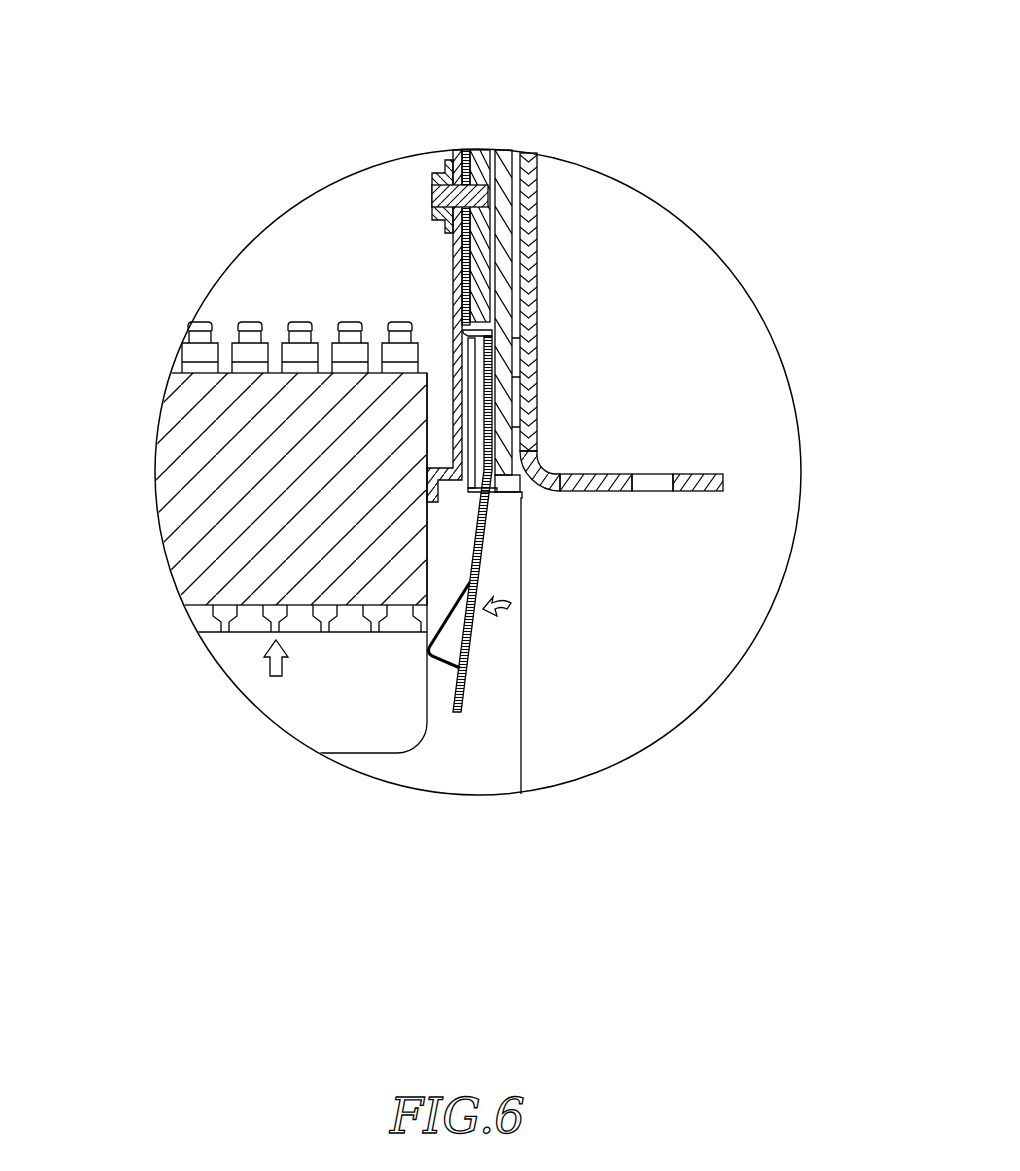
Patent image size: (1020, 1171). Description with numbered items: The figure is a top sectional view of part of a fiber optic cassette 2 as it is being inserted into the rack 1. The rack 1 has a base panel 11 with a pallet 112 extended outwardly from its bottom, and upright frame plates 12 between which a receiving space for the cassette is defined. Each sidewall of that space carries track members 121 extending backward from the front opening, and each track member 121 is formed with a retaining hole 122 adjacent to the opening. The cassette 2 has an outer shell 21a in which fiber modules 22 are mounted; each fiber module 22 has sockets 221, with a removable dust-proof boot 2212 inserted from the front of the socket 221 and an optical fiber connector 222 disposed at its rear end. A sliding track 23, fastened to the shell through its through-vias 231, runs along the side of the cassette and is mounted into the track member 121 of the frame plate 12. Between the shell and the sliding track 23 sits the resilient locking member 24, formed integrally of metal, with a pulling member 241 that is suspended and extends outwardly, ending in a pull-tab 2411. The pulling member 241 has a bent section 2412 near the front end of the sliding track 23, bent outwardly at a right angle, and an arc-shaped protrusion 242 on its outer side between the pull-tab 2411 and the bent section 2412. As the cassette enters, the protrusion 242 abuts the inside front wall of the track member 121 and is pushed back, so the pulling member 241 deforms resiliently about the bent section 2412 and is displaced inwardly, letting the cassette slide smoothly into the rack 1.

The rack 1 is at (624, 85).
The base panel 11 is at (537, 188).
The pallet 112 is at (507, 760).
The frame plate 12 is at (503, 360).
The track member 121 is at (476, 422).
The retaining hole 122 is at (502, 447).
The fiber optic cassette 2 is at (163, 167).
The outer shell 21a is at (457, 287).
The fiber module 22 is at (140, 443).
The socket 221 is at (168, 520).
The optical fiber connector 222 is at (195, 353).
The dust-proof boot 2212 is at (197, 620).
The sliding track 23 is at (473, 258).
The through-via 231 is at (472, 187).
The resilient locking member 24 is at (630, 673).
The pulling member 241 is at (465, 700).
The pull-tab 2411 is at (465, 640).
The bent section 2412 is at (492, 330).
The arc-shaped protrusion 242 is at (527, 238).